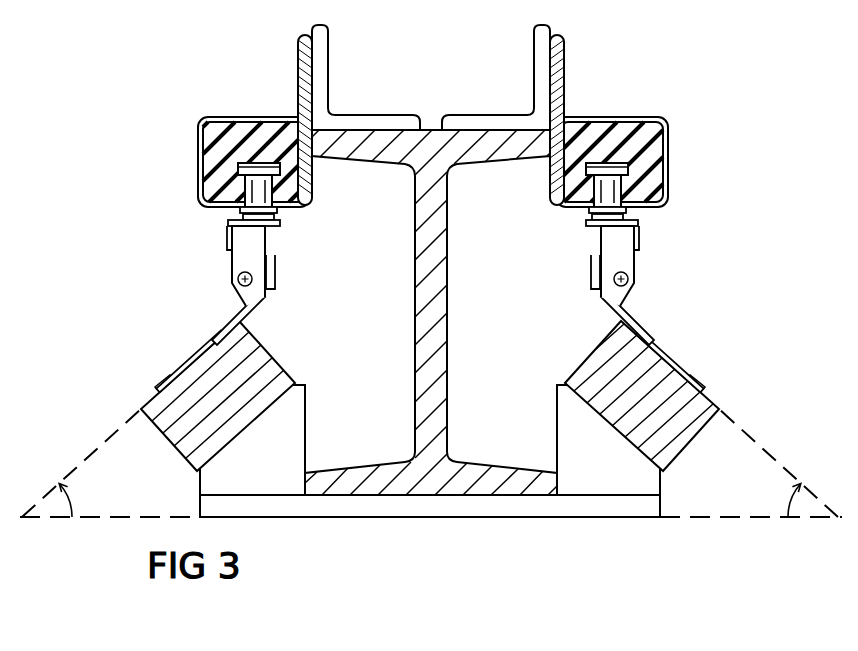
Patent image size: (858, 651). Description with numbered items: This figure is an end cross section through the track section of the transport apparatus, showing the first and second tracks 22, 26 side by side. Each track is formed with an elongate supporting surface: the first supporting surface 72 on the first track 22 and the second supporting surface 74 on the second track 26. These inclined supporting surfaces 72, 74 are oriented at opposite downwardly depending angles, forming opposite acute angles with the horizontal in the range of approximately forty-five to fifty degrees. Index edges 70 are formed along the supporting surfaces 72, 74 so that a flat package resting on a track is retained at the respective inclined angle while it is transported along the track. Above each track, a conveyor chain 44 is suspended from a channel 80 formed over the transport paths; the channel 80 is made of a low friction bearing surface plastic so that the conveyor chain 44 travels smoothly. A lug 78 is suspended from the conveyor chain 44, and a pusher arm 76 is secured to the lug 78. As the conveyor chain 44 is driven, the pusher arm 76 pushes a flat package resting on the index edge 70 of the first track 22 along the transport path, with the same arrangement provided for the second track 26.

The first track 22 is at (151, 394).
The second track 26 is at (705, 385).
The conveyor chain 44 is at (257, 183).
The index edge 70 is at (206, 347).
The first supporting surface 72 is at (186, 368).
The second supporting surface 74 is at (676, 361).
The pusher arm 76 is at (249, 305).
The lug 78 is at (228, 232).
The channel 80 is at (280, 132).